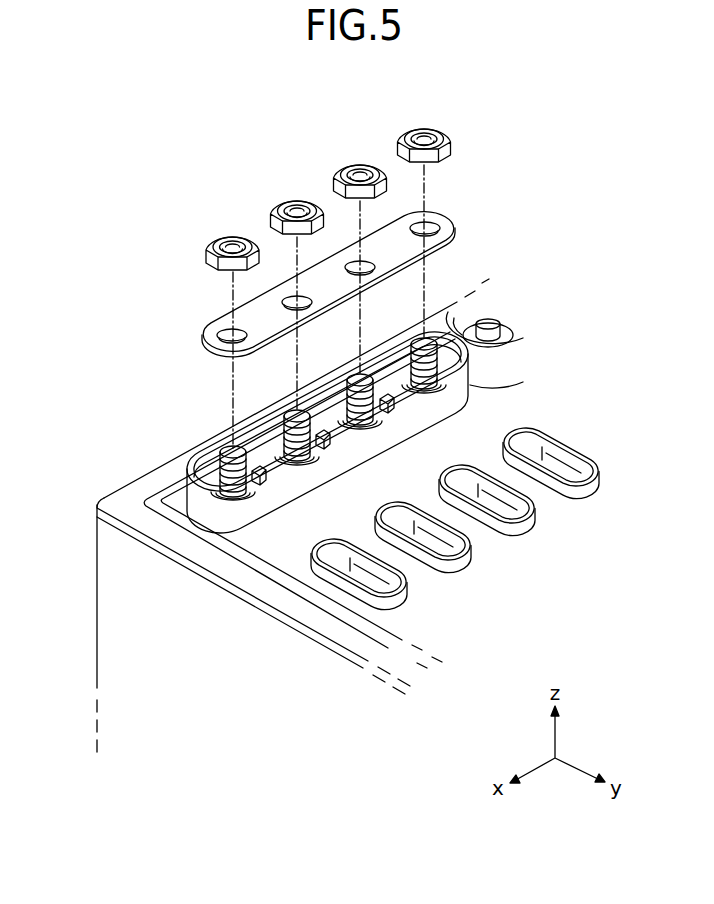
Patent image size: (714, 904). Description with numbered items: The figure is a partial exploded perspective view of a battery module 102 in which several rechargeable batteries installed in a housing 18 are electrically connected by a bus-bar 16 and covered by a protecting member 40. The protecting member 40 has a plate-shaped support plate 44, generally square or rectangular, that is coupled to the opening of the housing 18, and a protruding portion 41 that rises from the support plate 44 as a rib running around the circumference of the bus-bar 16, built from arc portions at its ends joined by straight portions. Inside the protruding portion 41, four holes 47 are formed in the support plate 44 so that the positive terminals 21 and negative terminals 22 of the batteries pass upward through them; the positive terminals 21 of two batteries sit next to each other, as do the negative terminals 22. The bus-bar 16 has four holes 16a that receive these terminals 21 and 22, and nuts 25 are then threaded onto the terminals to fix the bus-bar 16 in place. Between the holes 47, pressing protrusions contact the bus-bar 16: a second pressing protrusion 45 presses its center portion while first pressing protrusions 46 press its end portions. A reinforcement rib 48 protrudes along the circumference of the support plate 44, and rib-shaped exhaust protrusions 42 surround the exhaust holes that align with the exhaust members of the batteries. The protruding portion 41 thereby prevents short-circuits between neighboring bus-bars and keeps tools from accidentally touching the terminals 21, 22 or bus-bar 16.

The battery module 102 is at (240, 144).
The bus-bar 16 is at (331, 268).
The holes 16a is at (228, 332).
The nuts 25 is at (207, 240).
The positive terminals 21 is at (218, 450).
The negative terminals 22 is at (360, 378).
The second pressing protrusion 45 is at (320, 430).
The first pressing protrusions 46 is at (251, 468).
The holes 47 is at (229, 453).
The protecting member 40 is at (102, 486).
The protruding portion 41 is at (208, 510).
The housing 18 is at (133, 610).
The reinforcement rib 48 is at (262, 570).
The support plate 44 is at (300, 608).
The exhaust protrusion 42 is at (358, 592).